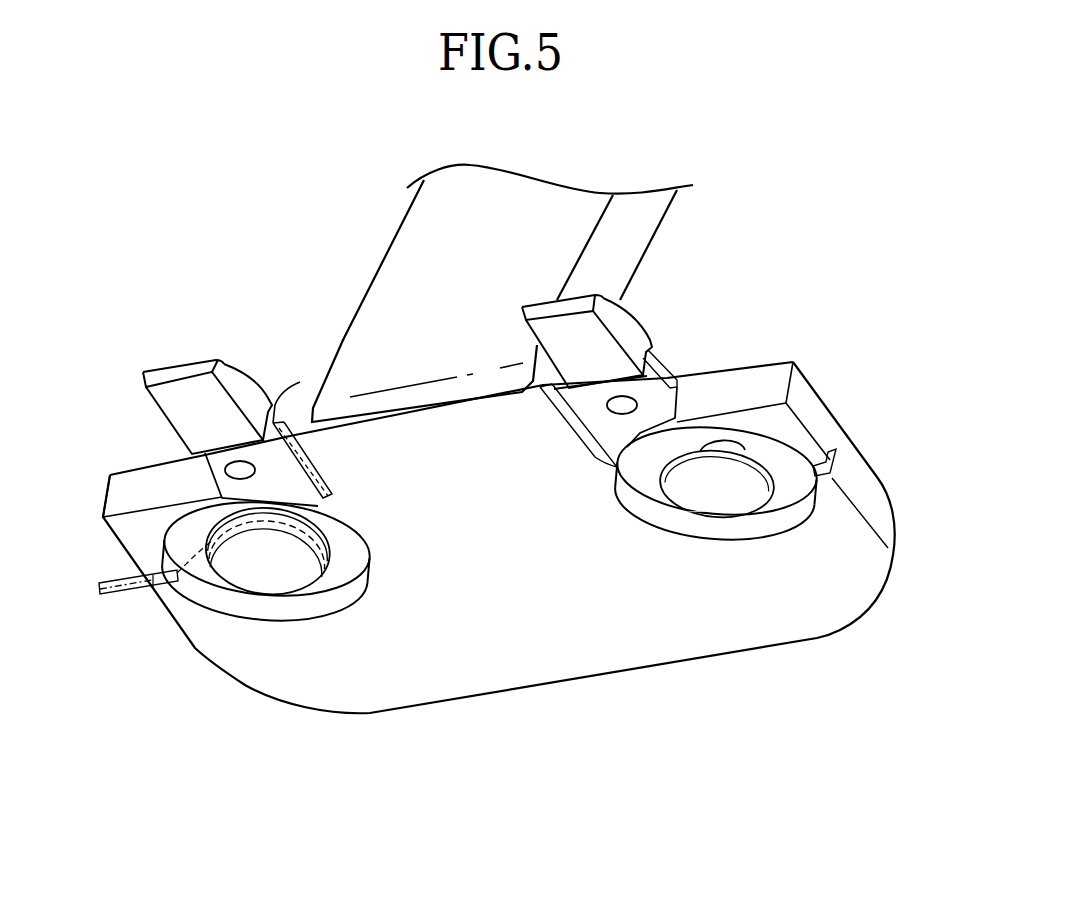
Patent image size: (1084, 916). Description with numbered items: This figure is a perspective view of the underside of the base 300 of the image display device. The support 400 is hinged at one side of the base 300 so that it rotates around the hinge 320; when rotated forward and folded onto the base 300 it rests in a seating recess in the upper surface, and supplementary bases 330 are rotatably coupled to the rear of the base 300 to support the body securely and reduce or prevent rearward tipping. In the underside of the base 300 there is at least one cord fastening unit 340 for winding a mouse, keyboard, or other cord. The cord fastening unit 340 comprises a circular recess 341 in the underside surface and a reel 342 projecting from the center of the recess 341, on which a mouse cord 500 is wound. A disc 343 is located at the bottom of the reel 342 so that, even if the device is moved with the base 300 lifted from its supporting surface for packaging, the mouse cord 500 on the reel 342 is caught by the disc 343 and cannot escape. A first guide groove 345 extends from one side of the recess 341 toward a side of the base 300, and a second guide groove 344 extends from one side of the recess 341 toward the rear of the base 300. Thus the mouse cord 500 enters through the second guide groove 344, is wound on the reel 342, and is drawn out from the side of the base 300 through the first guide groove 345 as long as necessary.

The base 300 is at (678, 662).
The support 400 is at (380, 260).
The hinge 320 is at (300, 382).
The supplementary bases 330 is at (632, 328).
The cord fastening unit 340 is at (658, 513).
The circular recess 341 is at (763, 450).
The reel 342 is at (723, 443).
The disc 343 is at (743, 503).
The second guide groove 344 is at (567, 423).
The first guide groove 345 is at (834, 463).
The mouse cord 500 is at (113, 588).